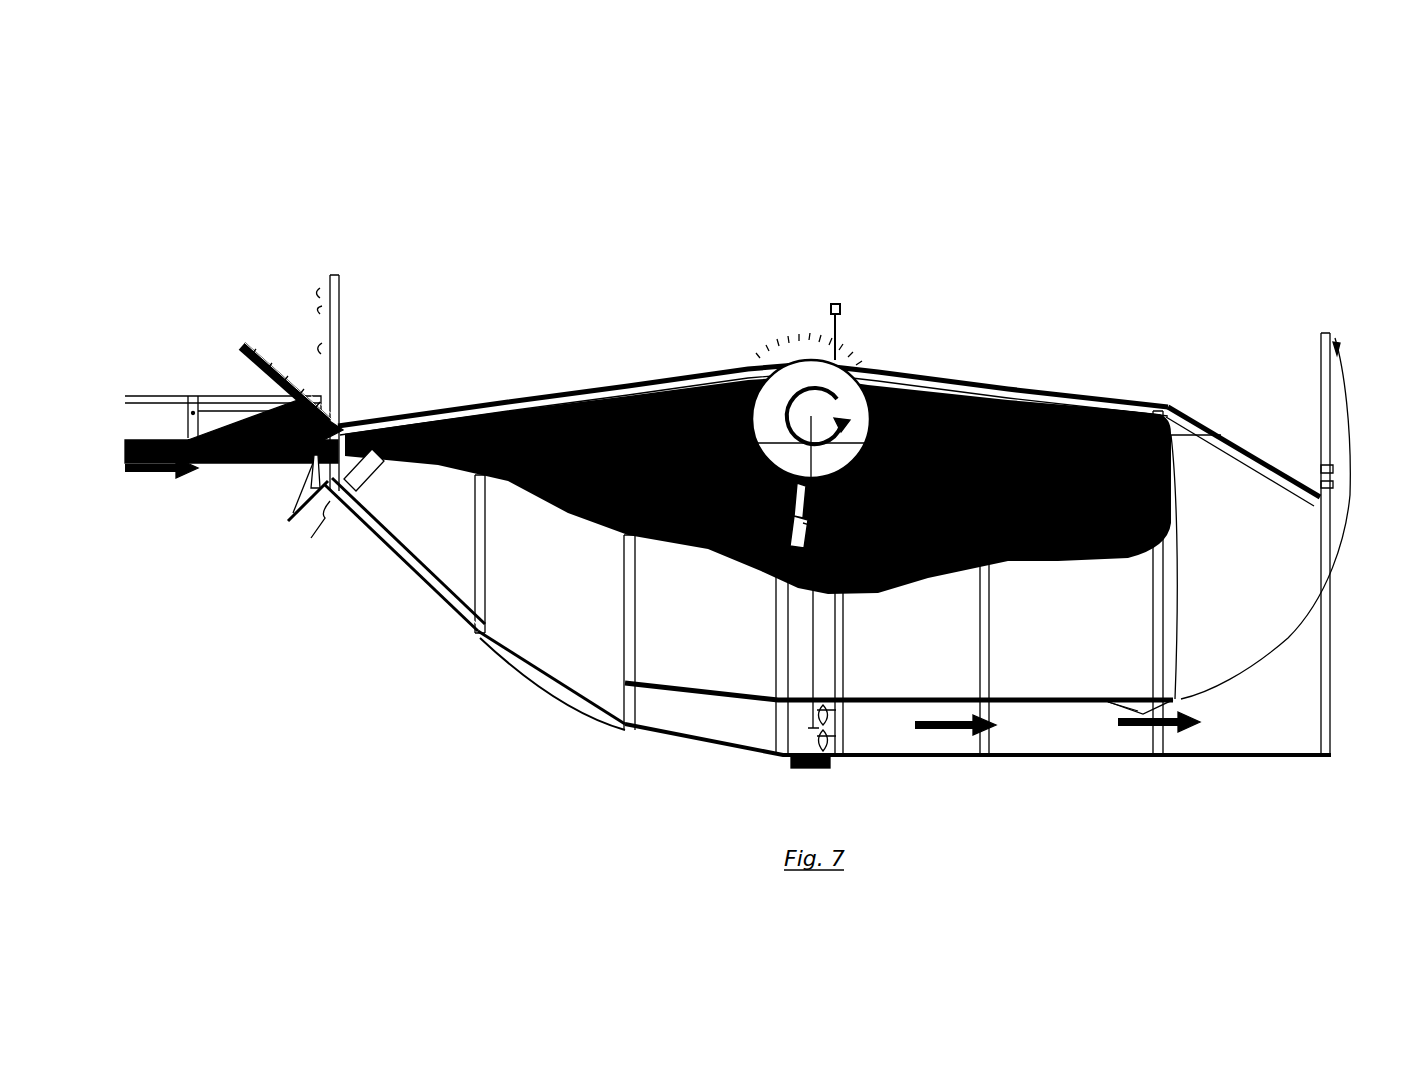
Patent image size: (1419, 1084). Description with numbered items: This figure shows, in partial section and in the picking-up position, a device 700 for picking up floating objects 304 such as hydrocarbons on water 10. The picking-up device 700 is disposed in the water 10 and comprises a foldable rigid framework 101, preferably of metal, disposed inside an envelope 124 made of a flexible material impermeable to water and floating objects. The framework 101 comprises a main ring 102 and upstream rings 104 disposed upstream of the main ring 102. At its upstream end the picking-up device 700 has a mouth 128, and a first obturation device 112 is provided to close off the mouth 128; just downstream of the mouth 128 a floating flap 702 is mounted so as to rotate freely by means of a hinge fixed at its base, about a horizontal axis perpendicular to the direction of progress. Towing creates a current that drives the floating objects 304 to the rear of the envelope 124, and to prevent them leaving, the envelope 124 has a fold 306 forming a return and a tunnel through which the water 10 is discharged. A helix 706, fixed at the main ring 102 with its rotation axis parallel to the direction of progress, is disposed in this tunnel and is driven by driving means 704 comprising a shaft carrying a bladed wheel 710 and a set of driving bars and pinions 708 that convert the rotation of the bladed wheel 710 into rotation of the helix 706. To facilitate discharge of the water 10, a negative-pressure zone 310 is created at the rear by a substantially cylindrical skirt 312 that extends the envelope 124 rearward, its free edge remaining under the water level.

The picking-up device 700 is at (1312, 199).
The framework 101 is at (1205, 309).
The first obturation device 112 is at (197, 303).
The floating objects 304 is at (1060, 392).
The skirt 312 is at (1241, 462).
The negative-pressure zone 310 is at (1247, 566).
The fold 306 is at (1070, 690).
The water 10 is at (435, 734).
The envelope 124 is at (472, 645).
The upstream rings 104 is at (308, 520).
The mouth 128 is at (303, 463).
The floating flap 702 is at (363, 458).
The driving means 704 is at (752, 330).
The bladed wheel 710 is at (832, 372).
The set of driving bars and pinions 708 is at (805, 632).
The helix 706 is at (822, 706).
The main ring 102 is at (792, 728).